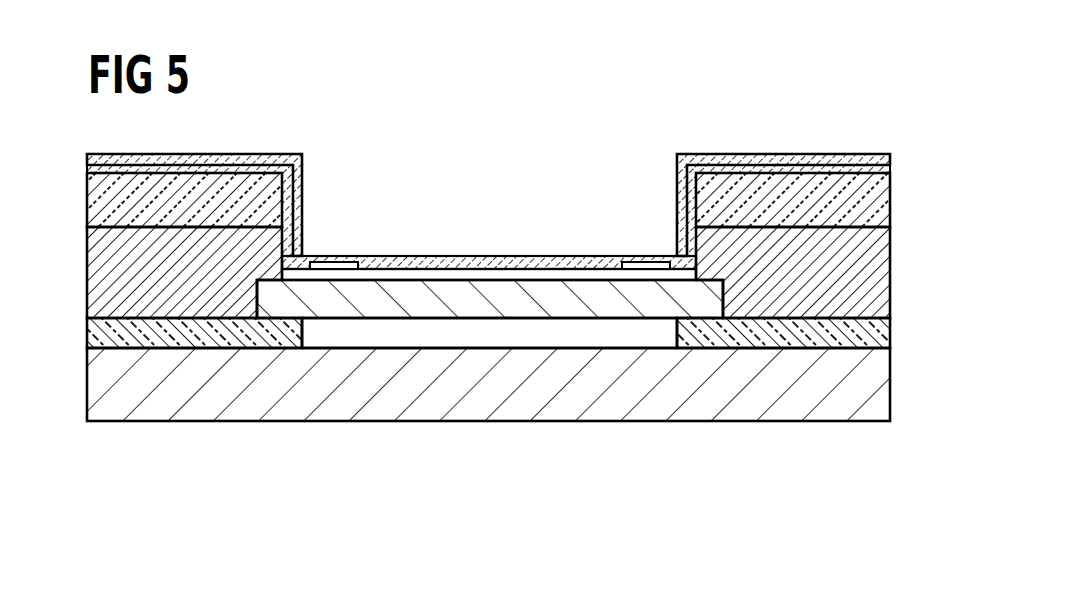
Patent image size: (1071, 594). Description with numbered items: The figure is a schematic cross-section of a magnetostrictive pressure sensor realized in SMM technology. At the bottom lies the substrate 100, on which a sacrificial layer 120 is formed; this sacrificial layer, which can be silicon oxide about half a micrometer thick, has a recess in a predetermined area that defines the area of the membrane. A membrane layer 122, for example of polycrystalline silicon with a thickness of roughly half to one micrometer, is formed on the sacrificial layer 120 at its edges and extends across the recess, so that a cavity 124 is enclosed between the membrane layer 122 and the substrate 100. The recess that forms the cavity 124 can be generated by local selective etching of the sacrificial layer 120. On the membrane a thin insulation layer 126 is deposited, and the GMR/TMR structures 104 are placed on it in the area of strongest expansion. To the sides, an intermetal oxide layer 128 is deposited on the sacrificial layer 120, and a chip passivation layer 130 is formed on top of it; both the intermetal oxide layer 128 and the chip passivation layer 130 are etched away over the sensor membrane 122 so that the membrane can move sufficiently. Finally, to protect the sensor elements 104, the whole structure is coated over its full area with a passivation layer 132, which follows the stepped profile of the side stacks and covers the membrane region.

The substrate 100 is at (170, 421).
The GMR/TMR structures 104 is at (338, 256).
The sacrificial layer 120 is at (890, 337).
The membrane layer 122 is at (490, 308).
The cavity 124 is at (367, 338).
The thin insulation layer 126 is at (482, 262).
The intermetal oxide layer 128 is at (890, 270).
The chip passivation layer 130 is at (890, 200).
The passivation layer 132 is at (755, 153).